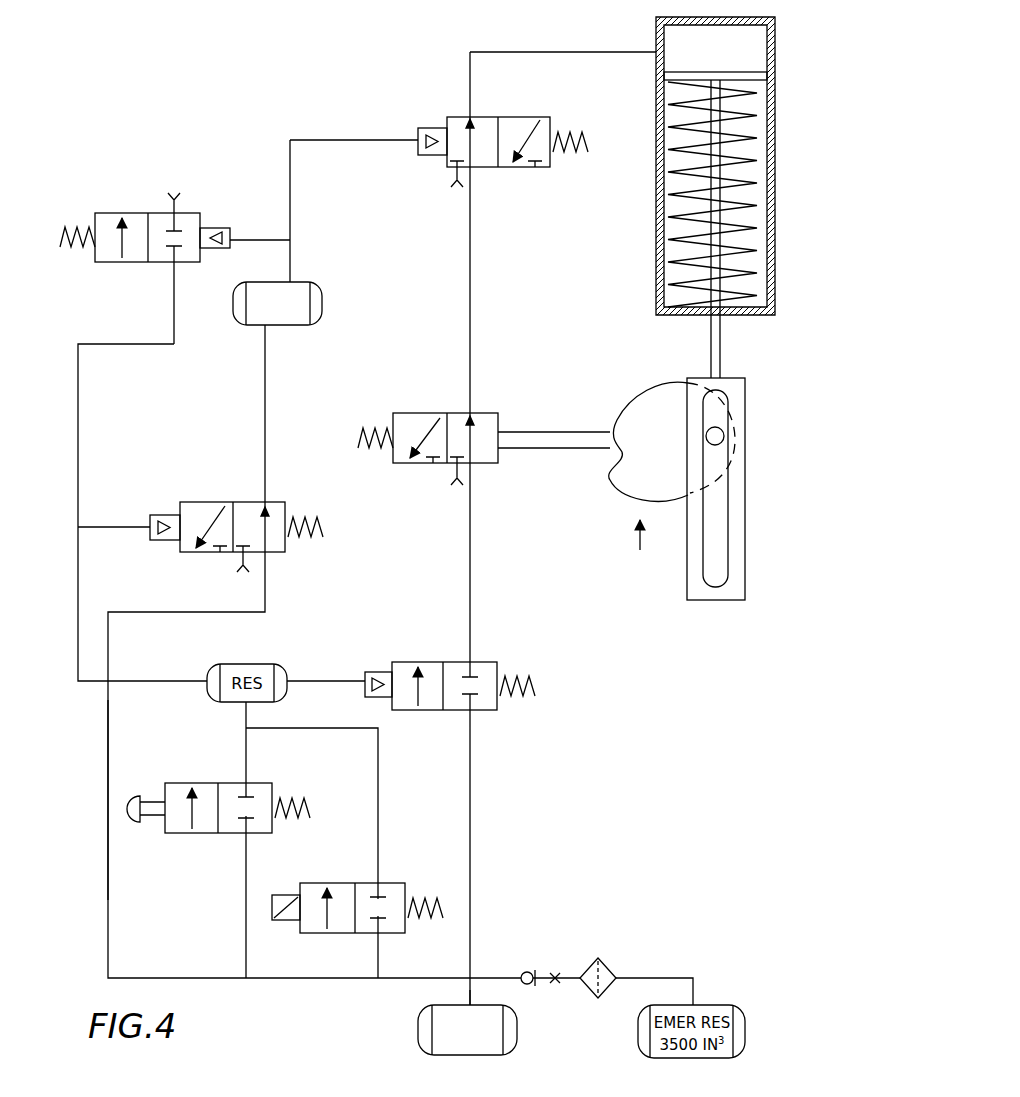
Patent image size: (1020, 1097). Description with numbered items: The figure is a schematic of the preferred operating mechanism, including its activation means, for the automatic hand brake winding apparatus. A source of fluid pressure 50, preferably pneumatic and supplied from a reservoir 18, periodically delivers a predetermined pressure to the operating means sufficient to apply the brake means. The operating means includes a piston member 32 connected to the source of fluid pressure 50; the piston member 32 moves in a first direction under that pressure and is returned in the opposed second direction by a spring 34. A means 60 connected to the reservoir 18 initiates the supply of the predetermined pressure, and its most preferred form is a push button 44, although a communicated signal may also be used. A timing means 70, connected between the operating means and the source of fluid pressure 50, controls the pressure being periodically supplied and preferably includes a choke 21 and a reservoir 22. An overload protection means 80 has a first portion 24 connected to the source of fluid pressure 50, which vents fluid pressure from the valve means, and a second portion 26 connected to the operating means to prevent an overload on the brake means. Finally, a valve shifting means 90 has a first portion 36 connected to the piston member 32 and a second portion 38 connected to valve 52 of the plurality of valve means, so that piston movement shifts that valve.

The reservoir 18 is at (514, 1020).
The choke 21 is at (243, 560).
The reservoir 22 is at (298, 325).
The first portion of overload protection means 24 is at (455, 486).
The second portion of overload protection means 26 is at (643, 412).
The piston member 32 is at (702, 76).
The spring 34 is at (685, 122).
The first portion of valve shifting means 36 is at (716, 582).
The second portion of valve shifting means 38 is at (533, 430).
The push button 44 is at (130, 822).
The source of fluid pressure 50 is at (449, 1022).
The valve 52 is at (461, 413).
The means for initiating supply of predetermined pressure 60 is at (105, 810).
The timing means 70 is at (228, 277).
The overload protection means 80 is at (696, 525).
The valve shifting means 90 is at (641, 551).